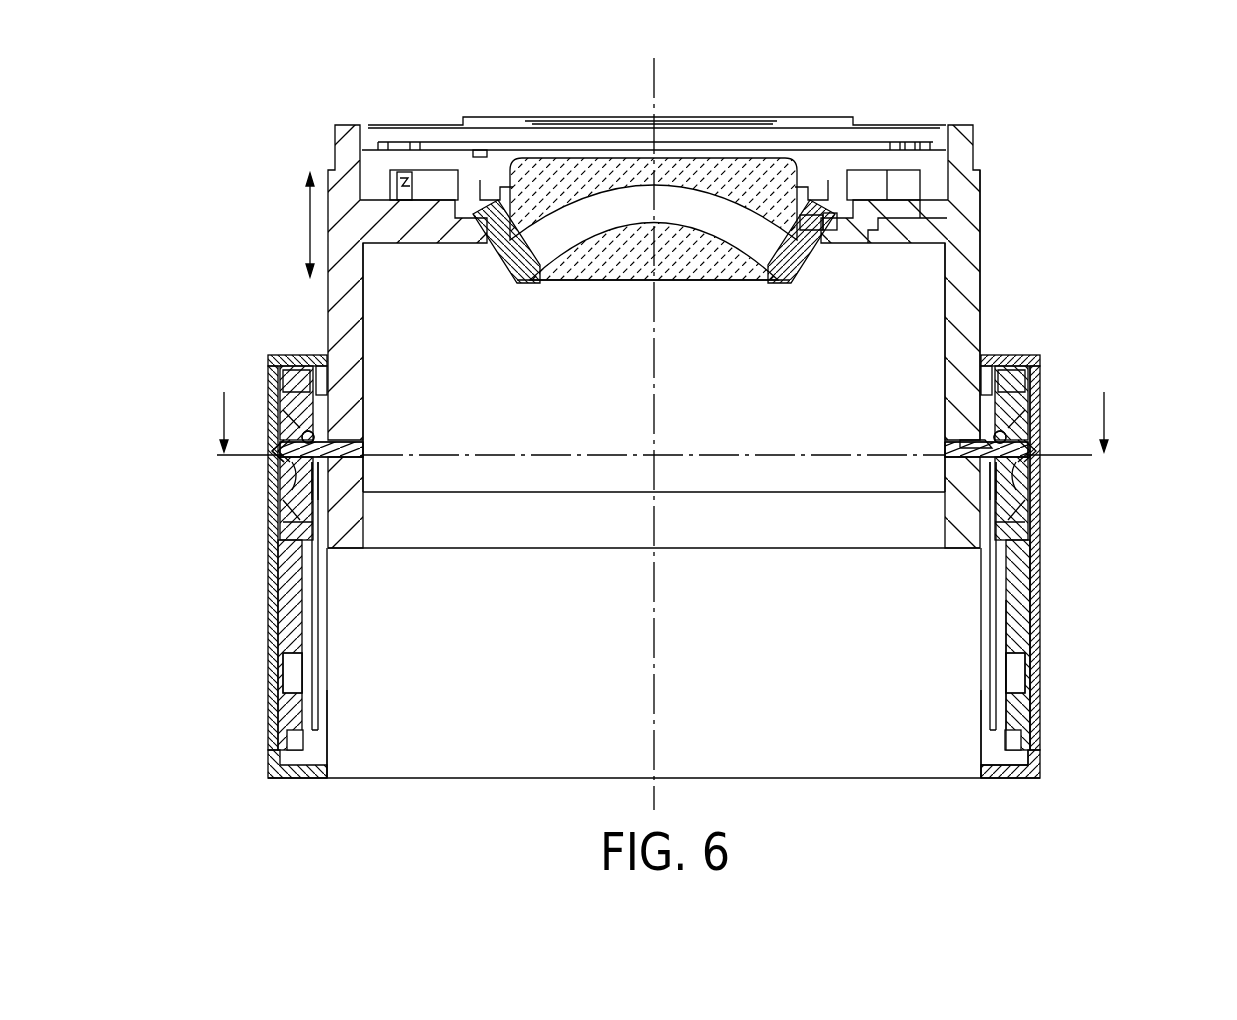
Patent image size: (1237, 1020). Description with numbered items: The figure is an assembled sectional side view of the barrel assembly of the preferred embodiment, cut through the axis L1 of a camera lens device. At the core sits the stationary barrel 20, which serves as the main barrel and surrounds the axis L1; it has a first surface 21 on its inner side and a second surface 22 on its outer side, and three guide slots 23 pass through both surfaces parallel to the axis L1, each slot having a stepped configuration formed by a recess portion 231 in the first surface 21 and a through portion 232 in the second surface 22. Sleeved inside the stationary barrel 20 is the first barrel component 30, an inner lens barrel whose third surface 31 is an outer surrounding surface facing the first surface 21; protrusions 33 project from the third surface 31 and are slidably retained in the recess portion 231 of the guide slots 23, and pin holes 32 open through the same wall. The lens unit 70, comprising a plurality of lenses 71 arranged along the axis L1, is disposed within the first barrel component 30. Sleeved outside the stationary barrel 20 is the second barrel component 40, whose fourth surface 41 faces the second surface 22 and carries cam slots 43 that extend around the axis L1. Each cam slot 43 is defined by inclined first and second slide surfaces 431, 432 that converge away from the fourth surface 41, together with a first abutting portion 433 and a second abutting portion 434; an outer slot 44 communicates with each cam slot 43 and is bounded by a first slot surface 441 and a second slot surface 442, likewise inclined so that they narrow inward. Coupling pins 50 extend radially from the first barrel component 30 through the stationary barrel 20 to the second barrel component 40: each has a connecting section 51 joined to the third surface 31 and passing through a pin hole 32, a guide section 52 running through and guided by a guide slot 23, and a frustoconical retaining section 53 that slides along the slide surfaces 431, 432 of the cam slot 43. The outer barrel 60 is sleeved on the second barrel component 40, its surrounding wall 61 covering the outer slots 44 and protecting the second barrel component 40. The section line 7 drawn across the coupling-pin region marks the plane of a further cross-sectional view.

The section line 7 is at (663, 422).
The stationary barrel 20 is at (1052, 770).
The first surface 21 is at (967, 762).
The second surface 22 is at (1000, 762).
The guide slot 23 is at (942, 742).
The first barrel component 30 is at (986, 196).
The third surface 31 is at (982, 222).
The pin hole 32 is at (654, 449).
The protrusion 33 is at (1003, 520).
The second barrel component 40 is at (1052, 640).
The fourth surface 41 is at (1012, 658).
The cam slot 43 is at (654, 437).
The outer slot 44 is at (1030, 466).
The coupling pin 50 is at (956, 434).
The connecting section 51 is at (942, 435).
The guide section 52 is at (1030, 523).
The retaining section 53 is at (993, 432).
The outer barrel 60 is at (1052, 582).
The surrounding wall 61 is at (1040, 606).
The lens unit 70 is at (793, 128).
The lens 71 is at (718, 250).
The recess portion 231 is at (990, 688).
The through portion 232 is at (997, 700).
The first slide surface 431 is at (1015, 375).
The second slide surface 432 is at (1032, 506).
The first abutting portion 433 is at (1032, 430).
The second abutting portion 434 is at (1022, 490).
The first slot surface 441 is at (270, 440).
The second slot surface 442 is at (278, 470).
The axis L1 is at (655, 418).